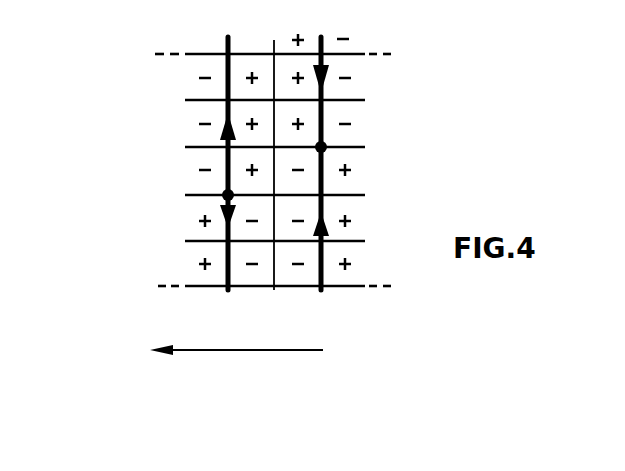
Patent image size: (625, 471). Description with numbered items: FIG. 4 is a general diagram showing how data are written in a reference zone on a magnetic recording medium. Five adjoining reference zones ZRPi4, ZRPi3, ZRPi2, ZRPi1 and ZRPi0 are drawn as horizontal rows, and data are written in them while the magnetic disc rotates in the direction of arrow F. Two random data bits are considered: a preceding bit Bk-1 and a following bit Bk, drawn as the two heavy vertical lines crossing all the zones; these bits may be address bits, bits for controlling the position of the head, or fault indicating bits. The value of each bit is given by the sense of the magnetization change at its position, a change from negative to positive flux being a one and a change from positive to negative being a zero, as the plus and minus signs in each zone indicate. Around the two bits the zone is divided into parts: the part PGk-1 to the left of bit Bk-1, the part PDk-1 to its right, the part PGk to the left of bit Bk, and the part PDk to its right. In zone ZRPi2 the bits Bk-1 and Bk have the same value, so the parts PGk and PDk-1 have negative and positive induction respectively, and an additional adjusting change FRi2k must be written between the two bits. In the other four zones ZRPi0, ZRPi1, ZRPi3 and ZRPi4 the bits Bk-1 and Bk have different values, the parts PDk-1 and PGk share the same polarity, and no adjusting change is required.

The preceding data bit Bk-1 is at (252, 37).
The data bit Bk is at (355, 37).
The reference zone ZRPi4 is at (202, 83).
The reference zone ZRPi3 is at (202, 128).
The reference zone ZRPi2 is at (202, 175).
The reference zone ZRPi1 is at (202, 221).
The reference zone ZRPi0 is at (202, 268).
The adjusting change FRi2k is at (275, 192).
The left part of bit Bk-1 PGk-1 is at (241, 300).
The left part of bit Bk PGk is at (321, 287).
The right part of bit Bk-1 PDk-1 is at (274, 288).
The right part of bit Bk PDk is at (346, 287).
The arrow indicating disc rotation direction F is at (234, 335).